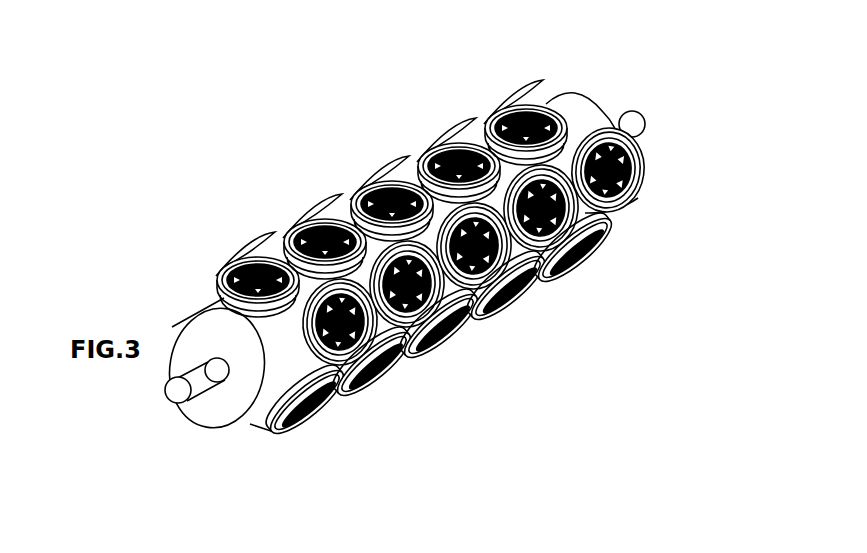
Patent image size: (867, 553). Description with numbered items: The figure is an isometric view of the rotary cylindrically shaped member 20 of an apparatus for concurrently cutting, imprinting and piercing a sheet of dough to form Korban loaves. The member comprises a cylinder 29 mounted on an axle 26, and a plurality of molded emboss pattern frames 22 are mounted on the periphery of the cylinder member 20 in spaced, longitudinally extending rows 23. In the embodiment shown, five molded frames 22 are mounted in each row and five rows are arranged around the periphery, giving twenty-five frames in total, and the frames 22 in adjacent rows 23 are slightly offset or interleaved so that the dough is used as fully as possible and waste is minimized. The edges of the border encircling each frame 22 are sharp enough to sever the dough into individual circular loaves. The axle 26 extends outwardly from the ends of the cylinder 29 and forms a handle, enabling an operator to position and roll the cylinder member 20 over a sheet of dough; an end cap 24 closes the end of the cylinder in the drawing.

The cylindrically shaped member 20 is at (600, 113).
The emboss pattern frame 22 is at (645, 163).
The rows 23 is at (222, 260).
The end cap 24 is at (275, 372).
The axle 26 is at (202, 373).
The cylinder 29 is at (572, 95).